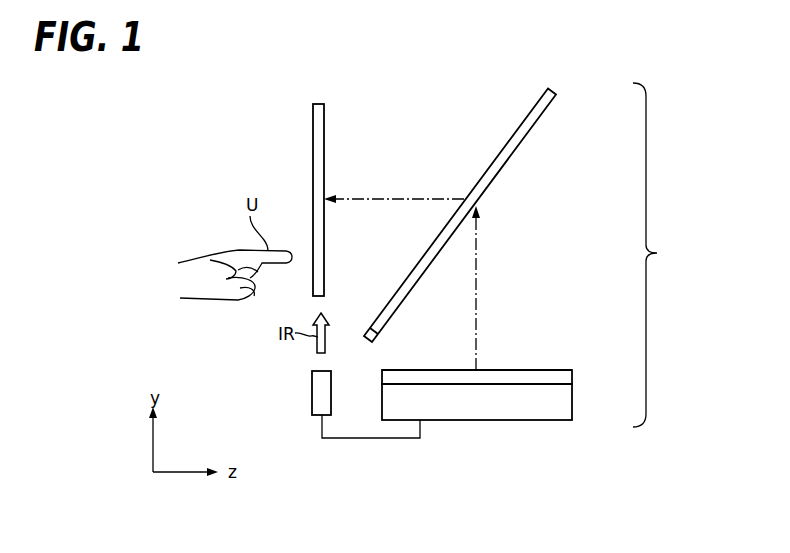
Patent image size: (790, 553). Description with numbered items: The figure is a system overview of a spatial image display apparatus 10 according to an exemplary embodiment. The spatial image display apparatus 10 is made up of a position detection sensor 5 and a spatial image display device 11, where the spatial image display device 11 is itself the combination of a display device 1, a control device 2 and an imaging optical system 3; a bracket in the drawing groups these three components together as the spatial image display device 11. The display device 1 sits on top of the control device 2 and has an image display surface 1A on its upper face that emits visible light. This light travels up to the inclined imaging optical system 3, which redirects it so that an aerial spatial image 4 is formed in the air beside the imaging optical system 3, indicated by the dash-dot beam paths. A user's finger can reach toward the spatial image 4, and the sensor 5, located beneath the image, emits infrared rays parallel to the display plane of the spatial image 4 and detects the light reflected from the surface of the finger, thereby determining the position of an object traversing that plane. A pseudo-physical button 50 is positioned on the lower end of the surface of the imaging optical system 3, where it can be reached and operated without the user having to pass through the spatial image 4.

The spatial image display apparatus 10 is at (478, 62).
The aerial spatial image 4 is at (324, 120).
The imaging optical system 3 is at (541, 118).
The pseudo-physical button 50 is at (372, 324).
The image display surface 1A is at (535, 369).
The display device 1 is at (572, 375).
The control device 2 is at (572, 402).
The position detection sensor 5 is at (312, 392).
The spatial image display device 11 is at (665, 255).